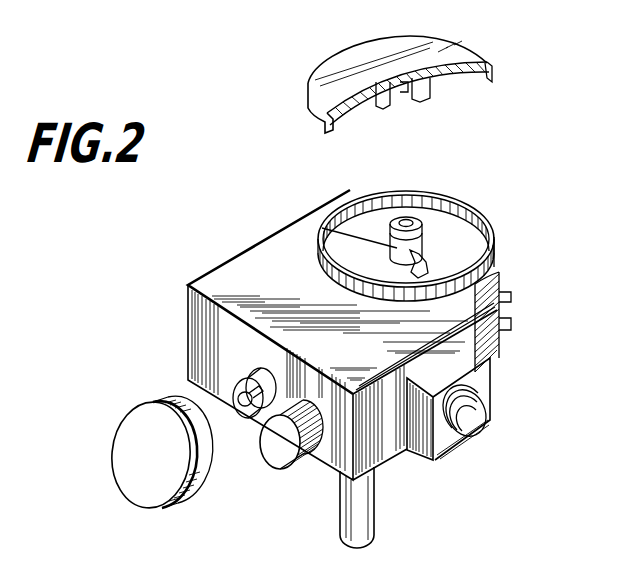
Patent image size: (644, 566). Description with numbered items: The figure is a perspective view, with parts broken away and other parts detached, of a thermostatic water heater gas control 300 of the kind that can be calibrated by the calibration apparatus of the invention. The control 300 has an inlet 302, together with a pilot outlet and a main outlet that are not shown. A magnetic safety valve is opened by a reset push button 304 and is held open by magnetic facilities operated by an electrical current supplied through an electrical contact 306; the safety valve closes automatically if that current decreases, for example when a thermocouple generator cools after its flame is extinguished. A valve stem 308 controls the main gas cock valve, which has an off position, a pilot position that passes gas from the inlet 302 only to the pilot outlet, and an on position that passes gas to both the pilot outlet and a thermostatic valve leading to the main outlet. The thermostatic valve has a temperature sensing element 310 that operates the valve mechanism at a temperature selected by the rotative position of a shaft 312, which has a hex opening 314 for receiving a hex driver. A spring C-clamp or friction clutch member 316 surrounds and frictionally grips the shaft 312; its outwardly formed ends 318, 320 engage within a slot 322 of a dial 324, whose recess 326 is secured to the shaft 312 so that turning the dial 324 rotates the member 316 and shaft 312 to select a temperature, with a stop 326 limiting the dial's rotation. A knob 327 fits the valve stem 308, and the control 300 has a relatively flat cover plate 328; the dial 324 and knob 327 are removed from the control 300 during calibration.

The thermostatic water heater gas control 300 is at (252, 233).
The inlet 302 is at (497, 418).
The reset push button 304 is at (280, 455).
The electrical contact 306 is at (483, 330).
The valve stem 308 is at (250, 380).
The temperature sensing element 310 is at (348, 520).
The shaft 312 is at (357, 203).
The hex opening 314 is at (403, 221).
The spring C-clamp or friction clutch member 316 is at (398, 247).
The end of member 318 is at (423, 222).
The end of member 320 is at (423, 231).
The slot 322 is at (425, 92).
The dial 324 is at (447, 48).
The recess / stop 326 is at (490, 253).
The knob 327 is at (140, 470).
The cover plate 328 is at (213, 280).